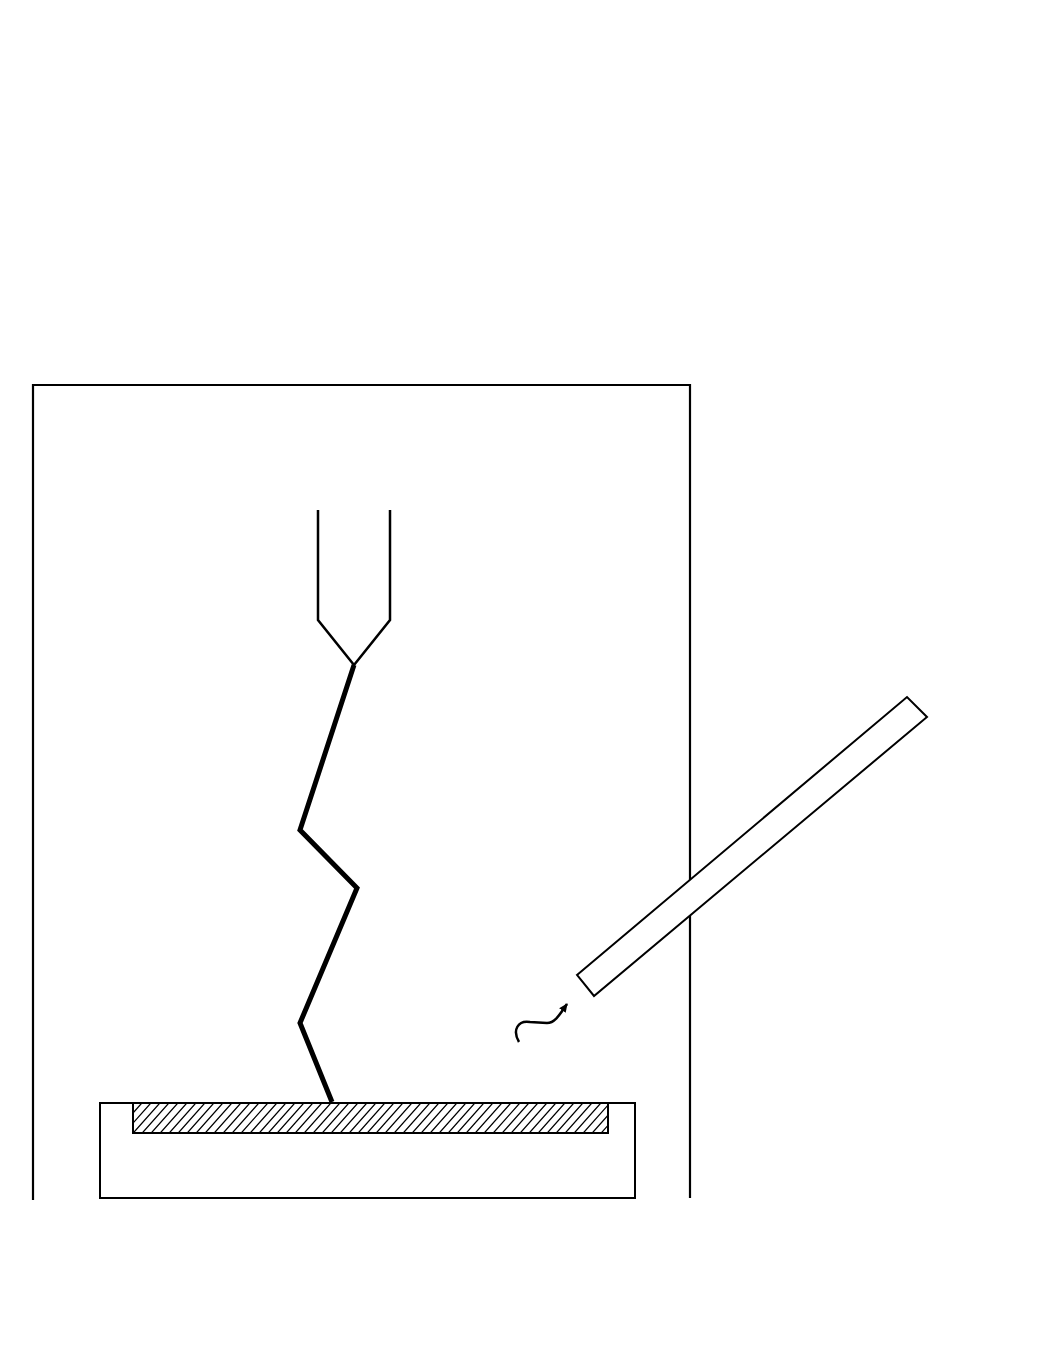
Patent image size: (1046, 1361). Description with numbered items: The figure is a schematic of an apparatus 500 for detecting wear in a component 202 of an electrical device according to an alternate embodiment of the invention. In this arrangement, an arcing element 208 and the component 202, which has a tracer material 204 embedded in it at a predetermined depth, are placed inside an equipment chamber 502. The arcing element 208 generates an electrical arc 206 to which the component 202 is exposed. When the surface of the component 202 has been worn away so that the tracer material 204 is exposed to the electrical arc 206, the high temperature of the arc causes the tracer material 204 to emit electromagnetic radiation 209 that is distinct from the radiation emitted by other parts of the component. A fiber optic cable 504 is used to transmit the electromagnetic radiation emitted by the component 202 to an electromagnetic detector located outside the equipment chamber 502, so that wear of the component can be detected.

The apparatus 500 is at (216, 243).
The equipment chamber 502 is at (441, 385).
The arcing element 208 is at (393, 580).
The electrical arc 206 is at (317, 760).
The electromagnetic radiation 209 is at (518, 1022).
The fiber optic cable 504 is at (745, 833).
The tracer material 204 is at (608, 1125).
The component 202 is at (635, 1198).